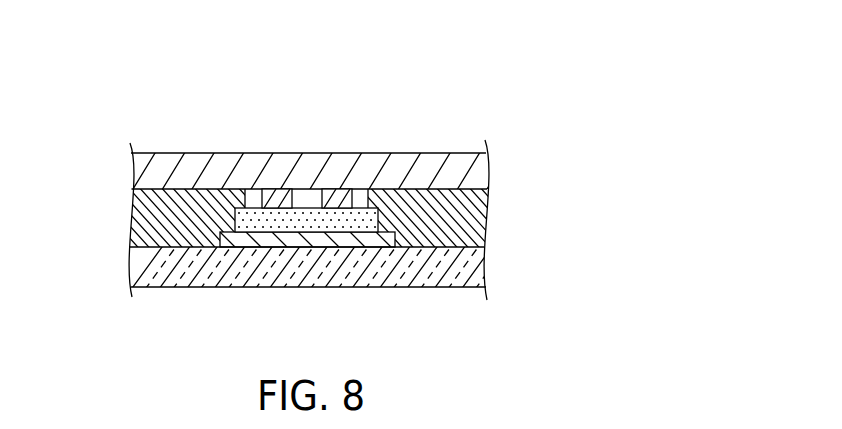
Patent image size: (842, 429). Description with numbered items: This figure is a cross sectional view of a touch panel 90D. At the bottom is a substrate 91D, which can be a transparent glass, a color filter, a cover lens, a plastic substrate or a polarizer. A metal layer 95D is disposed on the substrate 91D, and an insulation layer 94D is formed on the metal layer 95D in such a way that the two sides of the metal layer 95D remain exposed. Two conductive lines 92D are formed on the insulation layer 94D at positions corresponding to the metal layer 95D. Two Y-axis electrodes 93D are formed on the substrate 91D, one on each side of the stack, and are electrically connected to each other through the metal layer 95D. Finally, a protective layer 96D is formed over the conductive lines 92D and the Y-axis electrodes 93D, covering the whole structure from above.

The touch panel 90D is at (337, 36).
The substrate 91D is at (135, 268).
The conductive lines 92D is at (283, 200).
The Y-axis electrodes 93D is at (173, 200).
The insulation layer 94D is at (249, 220).
The metal layer 95D is at (317, 240).
The protective layer 96D is at (138, 172).